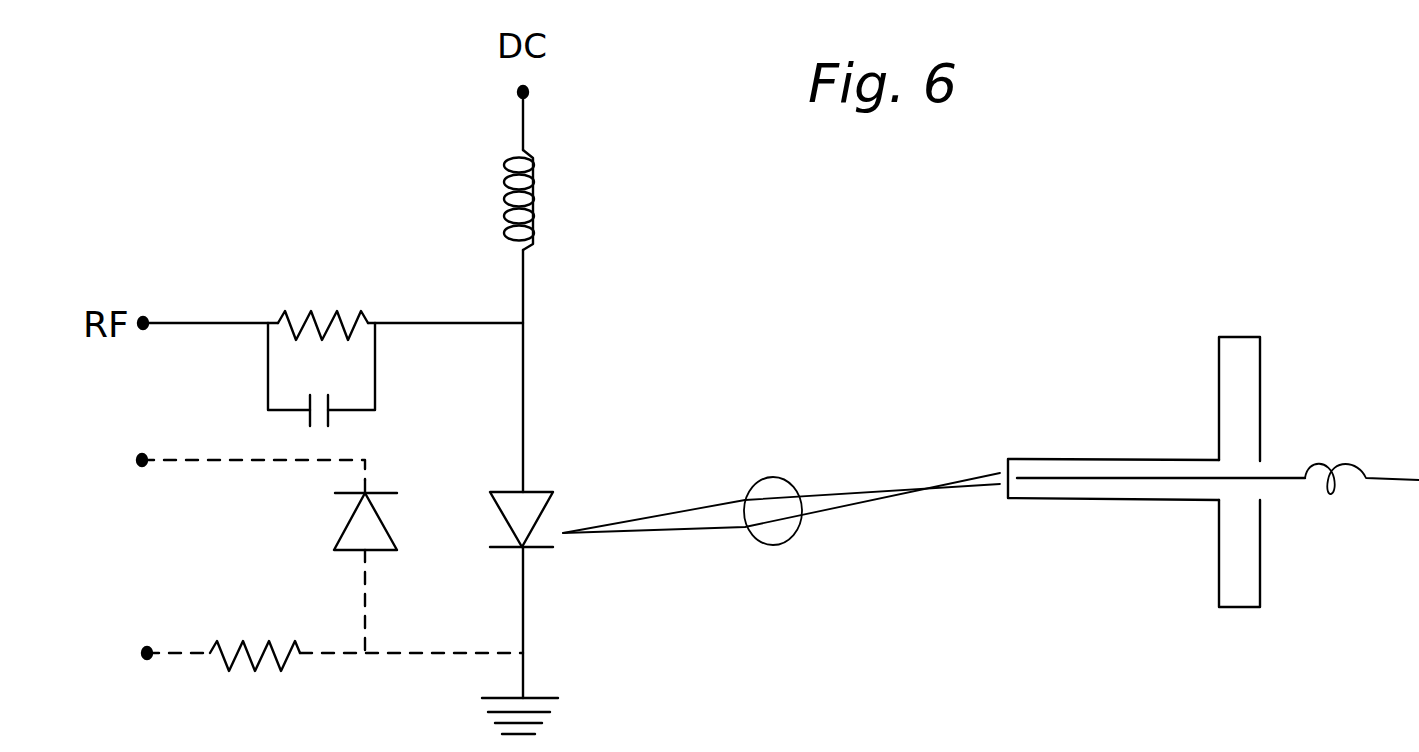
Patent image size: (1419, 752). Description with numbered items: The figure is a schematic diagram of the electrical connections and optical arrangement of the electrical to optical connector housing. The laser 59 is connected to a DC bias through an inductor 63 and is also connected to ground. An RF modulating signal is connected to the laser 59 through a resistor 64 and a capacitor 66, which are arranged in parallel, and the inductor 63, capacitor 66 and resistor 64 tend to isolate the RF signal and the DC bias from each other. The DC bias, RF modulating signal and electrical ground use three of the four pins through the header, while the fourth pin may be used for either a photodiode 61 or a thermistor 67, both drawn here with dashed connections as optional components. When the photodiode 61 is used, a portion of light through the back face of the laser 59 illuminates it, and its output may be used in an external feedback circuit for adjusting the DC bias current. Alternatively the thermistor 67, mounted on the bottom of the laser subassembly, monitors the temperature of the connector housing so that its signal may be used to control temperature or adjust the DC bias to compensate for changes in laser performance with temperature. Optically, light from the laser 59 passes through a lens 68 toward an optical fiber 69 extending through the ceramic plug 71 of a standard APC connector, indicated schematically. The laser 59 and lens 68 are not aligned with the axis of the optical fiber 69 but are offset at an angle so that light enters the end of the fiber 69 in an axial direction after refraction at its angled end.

The laser 59 is at (550, 492).
The photodiode 61 is at (387, 518).
The inductor 63 is at (537, 190).
The resistor 64 is at (356, 289).
The capacitor 66 is at (318, 416).
The thermistor 67 is at (268, 614).
The lens 68 is at (777, 546).
The optical fiber 69 is at (1375, 482).
The ceramic plug 71 is at (1077, 500).